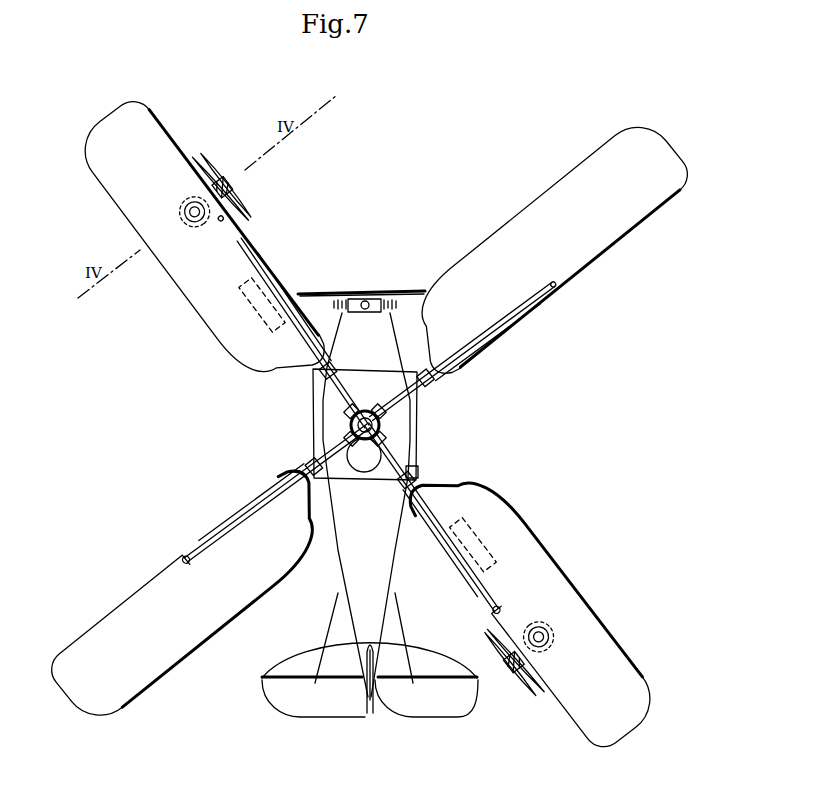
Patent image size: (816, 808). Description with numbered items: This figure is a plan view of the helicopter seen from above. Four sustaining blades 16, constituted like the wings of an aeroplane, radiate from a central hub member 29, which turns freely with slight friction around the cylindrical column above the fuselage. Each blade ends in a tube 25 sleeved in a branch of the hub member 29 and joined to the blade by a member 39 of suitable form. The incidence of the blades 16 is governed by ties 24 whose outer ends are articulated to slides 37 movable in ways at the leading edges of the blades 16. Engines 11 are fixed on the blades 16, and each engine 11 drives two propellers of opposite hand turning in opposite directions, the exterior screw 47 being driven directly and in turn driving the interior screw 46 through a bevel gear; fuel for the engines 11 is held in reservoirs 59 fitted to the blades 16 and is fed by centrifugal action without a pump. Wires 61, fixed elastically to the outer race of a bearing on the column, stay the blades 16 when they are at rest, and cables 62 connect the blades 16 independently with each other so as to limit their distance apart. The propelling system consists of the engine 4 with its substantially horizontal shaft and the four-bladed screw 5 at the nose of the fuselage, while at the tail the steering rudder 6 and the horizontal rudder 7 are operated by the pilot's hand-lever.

The engine 4 is at (364, 299).
The screw 5 is at (398, 291).
The steering rudder 6 is at (366, 696).
The horizontal rudder 7 is at (305, 706).
The engine 11 is at (185, 236).
The sustaining blade 16 is at (136, 130).
The tie 24 is at (237, 521).
The tube 25 is at (420, 470).
The hub member 29 is at (400, 428).
The slide 37 is at (183, 553).
The member 39 is at (318, 372).
The interior screw 46 is at (241, 226).
The exterior screw 47 is at (200, 153).
The reservoir 59 is at (262, 311).
The wire 61 is at (500, 316).
The cable 62 is at (312, 428).